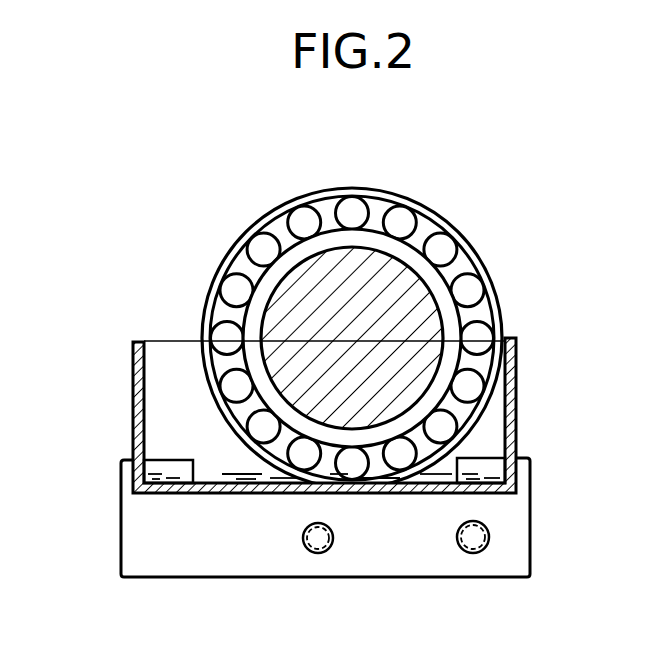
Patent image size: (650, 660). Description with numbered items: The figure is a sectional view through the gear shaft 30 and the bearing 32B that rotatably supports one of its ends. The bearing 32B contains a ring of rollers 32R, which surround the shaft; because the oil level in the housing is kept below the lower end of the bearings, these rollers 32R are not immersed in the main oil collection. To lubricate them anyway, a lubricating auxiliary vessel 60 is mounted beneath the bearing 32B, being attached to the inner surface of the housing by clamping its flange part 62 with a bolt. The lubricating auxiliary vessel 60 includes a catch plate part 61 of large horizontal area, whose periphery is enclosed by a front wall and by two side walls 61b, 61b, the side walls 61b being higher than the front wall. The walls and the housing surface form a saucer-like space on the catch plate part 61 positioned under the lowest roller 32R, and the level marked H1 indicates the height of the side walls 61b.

The gear shaft 30 is at (420, 322).
The bearing 32B is at (483, 240).
The rollers 32R is at (447, 428).
The lubricating auxiliary vessel 60 is at (225, 505).
The catch plate part 61 is at (327, 482).
The side walls 61b is at (132, 413).
The flange part 62 is at (498, 533).
The height of side wall H1 is at (167, 342).